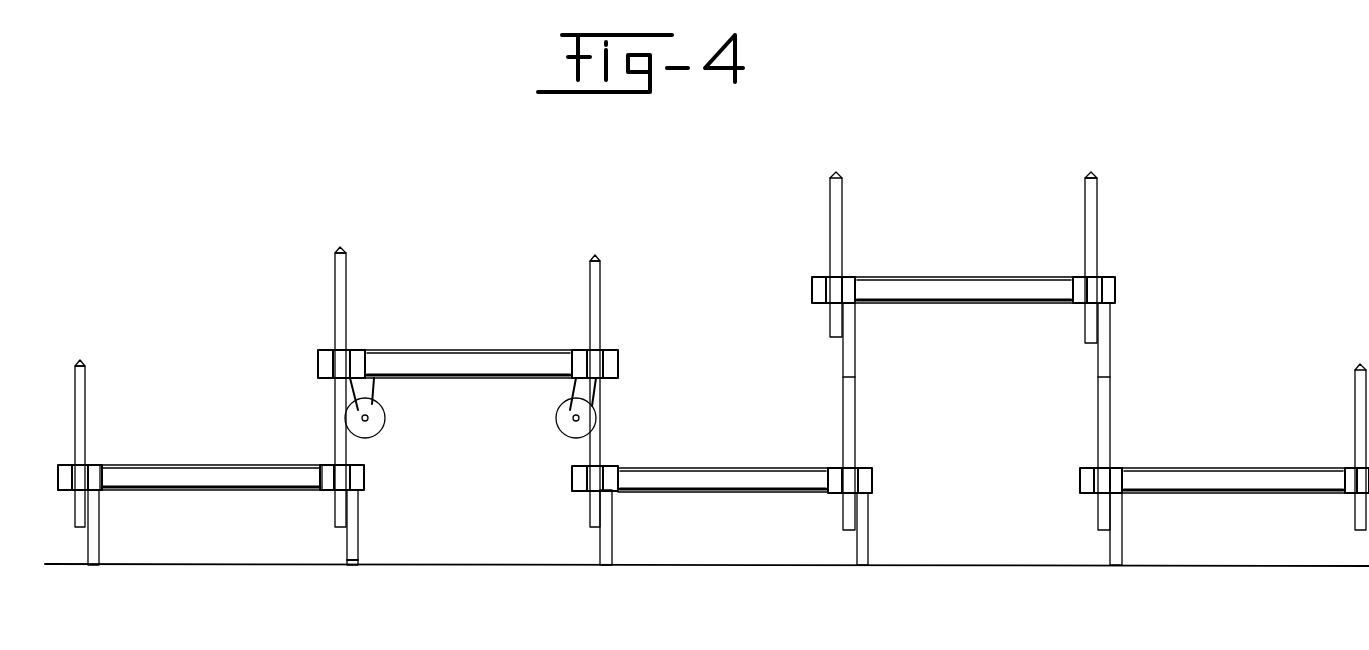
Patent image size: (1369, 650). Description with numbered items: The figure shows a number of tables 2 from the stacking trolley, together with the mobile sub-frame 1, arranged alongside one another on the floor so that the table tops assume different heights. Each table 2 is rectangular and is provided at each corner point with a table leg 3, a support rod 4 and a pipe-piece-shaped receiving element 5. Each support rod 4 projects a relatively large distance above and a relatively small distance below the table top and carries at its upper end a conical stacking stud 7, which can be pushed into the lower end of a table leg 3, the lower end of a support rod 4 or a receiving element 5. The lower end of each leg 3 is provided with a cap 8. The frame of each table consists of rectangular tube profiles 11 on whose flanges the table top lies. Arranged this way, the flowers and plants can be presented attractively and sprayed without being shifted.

The mobile sub-frame 1 is at (475, 368).
The table 2 is at (192, 463).
The table leg 3 is at (100, 541).
The support rod 4 is at (87, 410).
The receiving element 5 is at (83, 466).
The conical stacking stud 7 is at (84, 362).
The cap 8 is at (360, 558).
The rectangular tube profile 11 is at (722, 478).